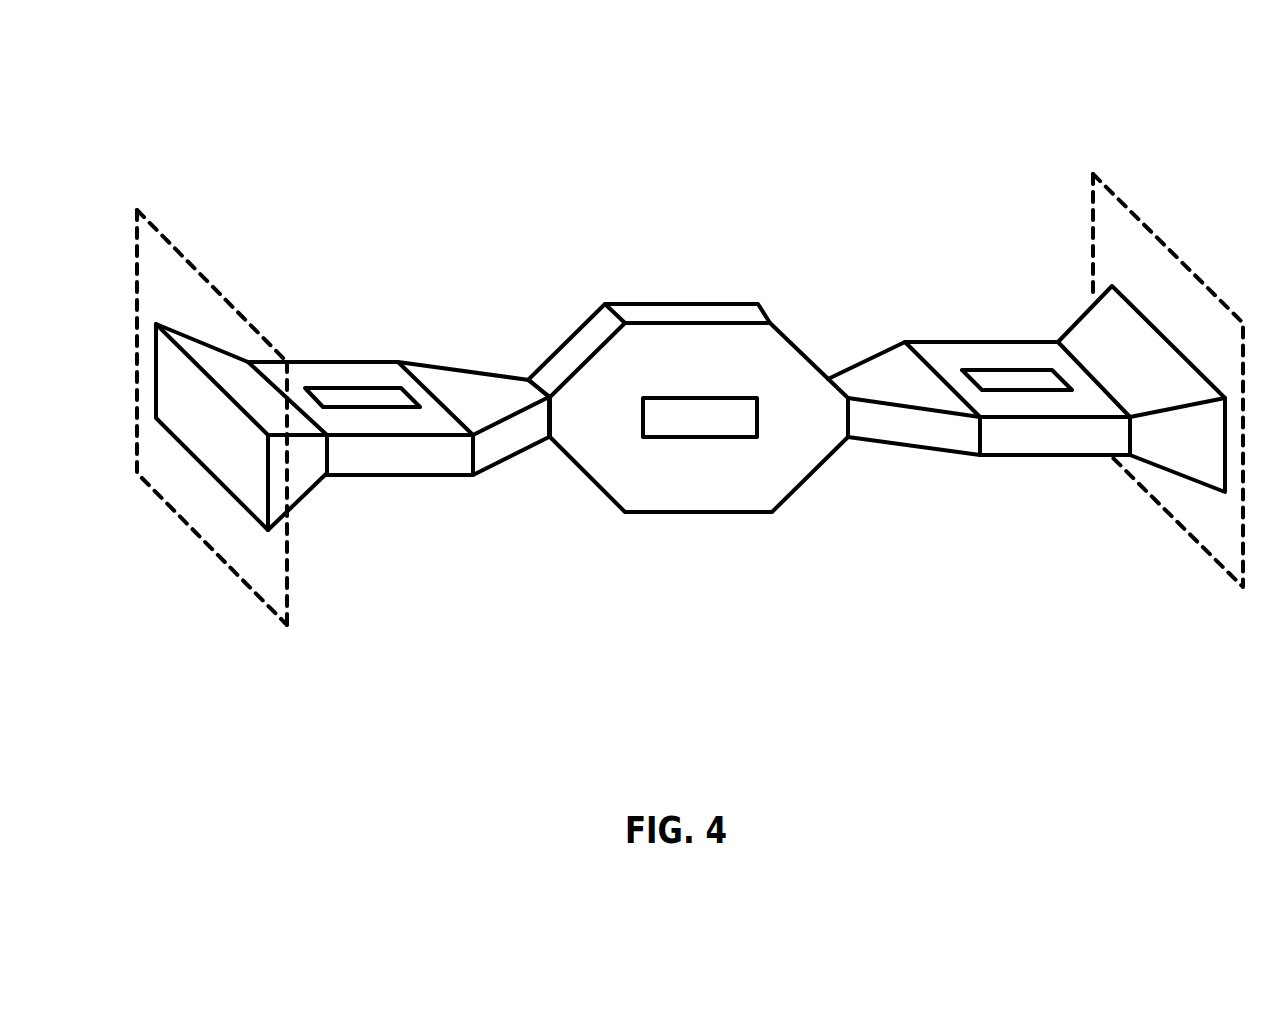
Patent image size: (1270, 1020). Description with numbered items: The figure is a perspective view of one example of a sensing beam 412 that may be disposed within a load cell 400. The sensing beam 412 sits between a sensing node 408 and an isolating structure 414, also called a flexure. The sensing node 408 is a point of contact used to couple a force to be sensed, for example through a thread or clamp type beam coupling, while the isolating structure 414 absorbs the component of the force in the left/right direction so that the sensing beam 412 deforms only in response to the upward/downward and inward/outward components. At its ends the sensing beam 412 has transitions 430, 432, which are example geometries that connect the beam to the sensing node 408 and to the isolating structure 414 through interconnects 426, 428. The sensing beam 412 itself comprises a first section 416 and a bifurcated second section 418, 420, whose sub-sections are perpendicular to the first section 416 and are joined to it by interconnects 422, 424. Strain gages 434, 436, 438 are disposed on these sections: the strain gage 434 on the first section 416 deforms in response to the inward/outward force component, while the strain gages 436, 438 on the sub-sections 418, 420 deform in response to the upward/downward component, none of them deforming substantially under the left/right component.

The load cell 400 is at (868, 98).
The sensing node 408 is at (175, 248).
The sensing beam 412 is at (689, 352).
The isolating structure 414 is at (1172, 242).
The first section 416 is at (704, 408).
The bifurcated second section sub-section 418 is at (375, 394).
The bifurcated second section sub-section 420 is at (1030, 375).
The interconnect 422 is at (555, 423).
The interconnect 424 is at (855, 428).
The interconnect 426 is at (332, 458).
The interconnect 428 is at (1138, 447).
The transition 430 is at (215, 337).
The transition 432 is at (1172, 333).
The strain gage 434 is at (653, 425).
The strain gage 436 is at (395, 390).
The strain gage 438 is at (1055, 377).